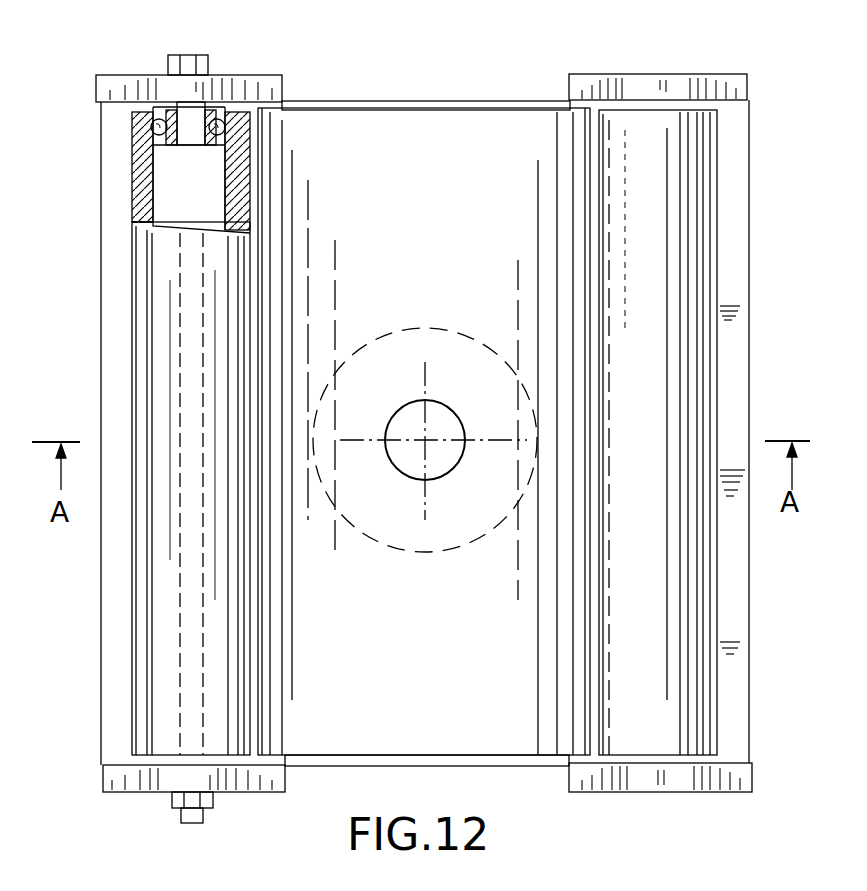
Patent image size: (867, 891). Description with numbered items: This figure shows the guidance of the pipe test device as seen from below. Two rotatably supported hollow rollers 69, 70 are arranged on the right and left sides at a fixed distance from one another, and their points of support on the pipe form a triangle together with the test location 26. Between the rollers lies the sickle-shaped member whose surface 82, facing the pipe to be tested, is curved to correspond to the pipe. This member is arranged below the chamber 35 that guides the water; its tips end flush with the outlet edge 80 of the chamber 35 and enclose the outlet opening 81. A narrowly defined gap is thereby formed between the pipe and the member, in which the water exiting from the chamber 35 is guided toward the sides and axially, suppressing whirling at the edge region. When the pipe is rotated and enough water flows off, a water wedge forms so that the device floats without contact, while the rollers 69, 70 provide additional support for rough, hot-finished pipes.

The test location 26 is at (425, 440).
The chamber 35 is at (478, 518).
The roller 69 is at (147, 307).
The roller 70 is at (695, 260).
The outlet edge 80 is at (443, 407).
The outlet opening 81 is at (412, 455).
The surface 82 is at (500, 147).